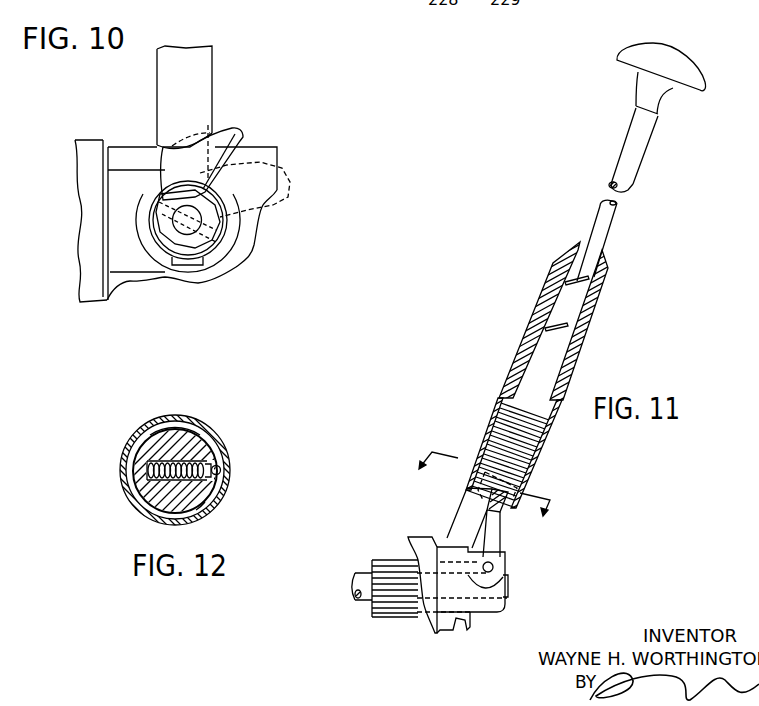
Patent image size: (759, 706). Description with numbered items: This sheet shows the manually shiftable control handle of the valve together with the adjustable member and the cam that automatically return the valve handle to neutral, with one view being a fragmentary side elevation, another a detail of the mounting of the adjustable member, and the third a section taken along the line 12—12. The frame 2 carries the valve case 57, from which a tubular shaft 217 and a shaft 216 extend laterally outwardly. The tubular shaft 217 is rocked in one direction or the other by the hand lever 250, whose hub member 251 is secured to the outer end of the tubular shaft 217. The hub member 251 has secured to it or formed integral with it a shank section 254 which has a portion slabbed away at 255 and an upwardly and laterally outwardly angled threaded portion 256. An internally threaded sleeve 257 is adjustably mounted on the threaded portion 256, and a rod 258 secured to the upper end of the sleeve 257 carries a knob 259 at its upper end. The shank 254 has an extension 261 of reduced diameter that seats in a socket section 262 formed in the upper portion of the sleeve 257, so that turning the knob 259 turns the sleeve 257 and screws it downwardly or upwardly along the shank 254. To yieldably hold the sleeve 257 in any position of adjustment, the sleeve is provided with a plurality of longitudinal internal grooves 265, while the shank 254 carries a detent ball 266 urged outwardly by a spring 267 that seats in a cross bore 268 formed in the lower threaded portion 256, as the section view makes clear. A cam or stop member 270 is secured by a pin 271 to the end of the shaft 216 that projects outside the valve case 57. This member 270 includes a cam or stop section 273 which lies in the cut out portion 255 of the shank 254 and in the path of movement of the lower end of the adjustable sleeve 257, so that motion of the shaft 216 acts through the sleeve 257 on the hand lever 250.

In FIG. 10, the frame wall 2 is at (82, 138).
In FIG. 11, the section line 12- 12 is at (490, 491).
In FIG. 10, the valve case 57 is at (127, 155).
In FIG. 10, the shaft 216 is at (187, 232).
In FIG. 11, the shaft 216 is at (366, 601).
In FIG. 11, the tubular shaft 217 is at (405, 614).
In FIG. 10, the hand lever 250 is at (152, 103).
In FIG. 11, the hand lever 250 is at (492, 412).
In FIG. 11, the hub member 251 is at (465, 620).
In FIG. 12, the shank section 254 is at (141, 498).
In FIG. 11, the shank section 254 is at (473, 470).
In FIG. 11, the slabbed away portion 255 is at (498, 500).
In FIG. 12, the threaded portion 256 is at (190, 446).
In FIG. 11, the threaded portion 256 is at (523, 440).
In FIG. 10, the sleeve 257 is at (180, 58).
In FIG. 11, the sleeve 257 is at (520, 360).
In FIG. 11, the rod 258 is at (629, 184).
In FIG. 11, the knob 259 is at (650, 53).
In FIG. 11, the extension 261 is at (553, 347).
In FIG. 11, the socket section 262 is at (588, 310).
In FIG. 12, the longitudinal internal grooves 265 is at (190, 422).
In FIG. 12, the detent ball 266 is at (221, 473).
In FIG. 12, the spring 267 is at (196, 515).
In FIG. 12, the cross bore 268 is at (206, 507).
In FIG. 11, the cross bore 268 is at (466, 505).
In FIG. 10, the cam member 270 is at (228, 177).
In FIG. 10, the pin 271 is at (216, 226).
In FIG. 11, the pin 271 is at (494, 568).
In FIG. 10, the cam or stop section 273 is at (222, 139).